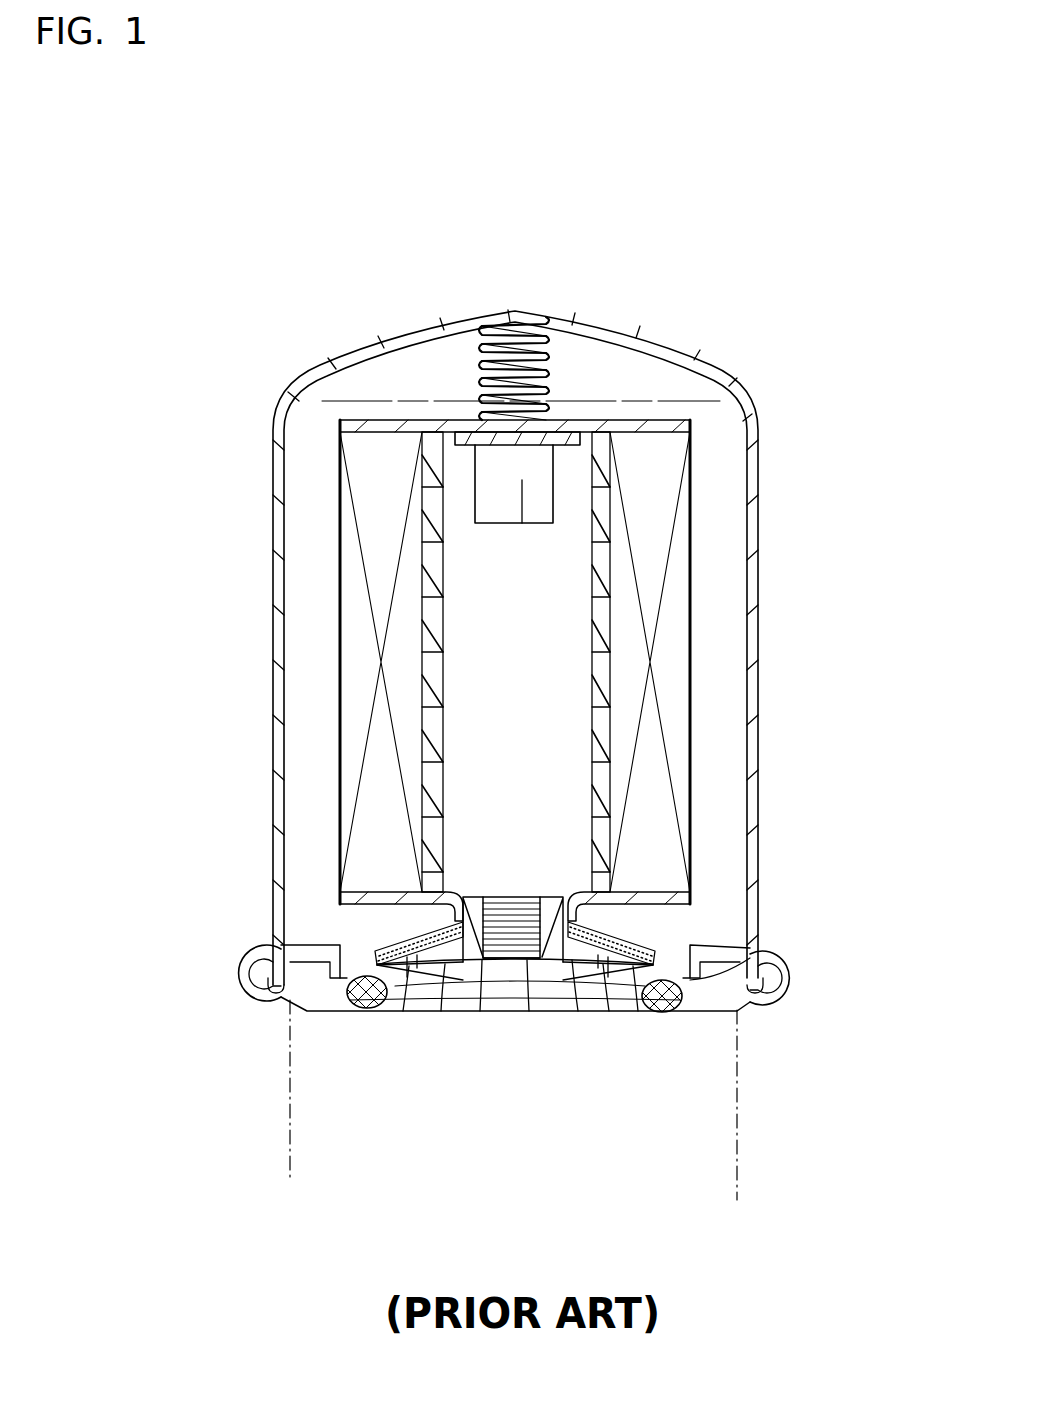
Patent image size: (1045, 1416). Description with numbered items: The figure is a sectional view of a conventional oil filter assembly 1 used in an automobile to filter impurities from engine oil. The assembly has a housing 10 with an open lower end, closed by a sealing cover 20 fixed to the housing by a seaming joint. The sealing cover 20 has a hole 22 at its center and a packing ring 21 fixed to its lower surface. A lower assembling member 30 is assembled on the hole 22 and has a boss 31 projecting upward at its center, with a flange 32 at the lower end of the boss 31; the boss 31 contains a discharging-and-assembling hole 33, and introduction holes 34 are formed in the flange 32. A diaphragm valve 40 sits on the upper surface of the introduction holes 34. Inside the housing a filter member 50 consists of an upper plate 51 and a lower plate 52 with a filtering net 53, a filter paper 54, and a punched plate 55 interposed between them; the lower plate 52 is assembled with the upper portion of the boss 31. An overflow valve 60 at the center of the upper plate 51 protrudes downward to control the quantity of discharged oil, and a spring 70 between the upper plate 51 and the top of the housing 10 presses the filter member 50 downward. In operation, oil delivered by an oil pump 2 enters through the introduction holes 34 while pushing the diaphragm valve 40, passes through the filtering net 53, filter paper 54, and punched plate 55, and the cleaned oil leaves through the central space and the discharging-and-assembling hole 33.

The oil filter assembly 1 is at (772, 283).
The oil pump 2 is at (748, 1115).
The housing 10 is at (764, 565).
The sealing cover 20 is at (335, 1003).
The packing ring 21 is at (355, 1004).
The hole 22 is at (630, 1005).
The lower assembling member 30 is at (455, 977).
The boss 31 is at (529, 963).
The flange 32 is at (568, 975).
The discharging-and-assembling hole 33 is at (478, 975).
The introduction holes 34 is at (425, 985).
The diaphragm valve 40 is at (628, 918).
The filter member 50 is at (698, 745).
The upper plate 51 is at (663, 428).
The lower plate 52 is at (668, 908).
The filtering net 53 is at (338, 712).
The filter paper 54 is at (378, 603).
The punched plate 55 is at (428, 535).
The overflow valve 60 is at (554, 458).
The spring 70 is at (472, 364).